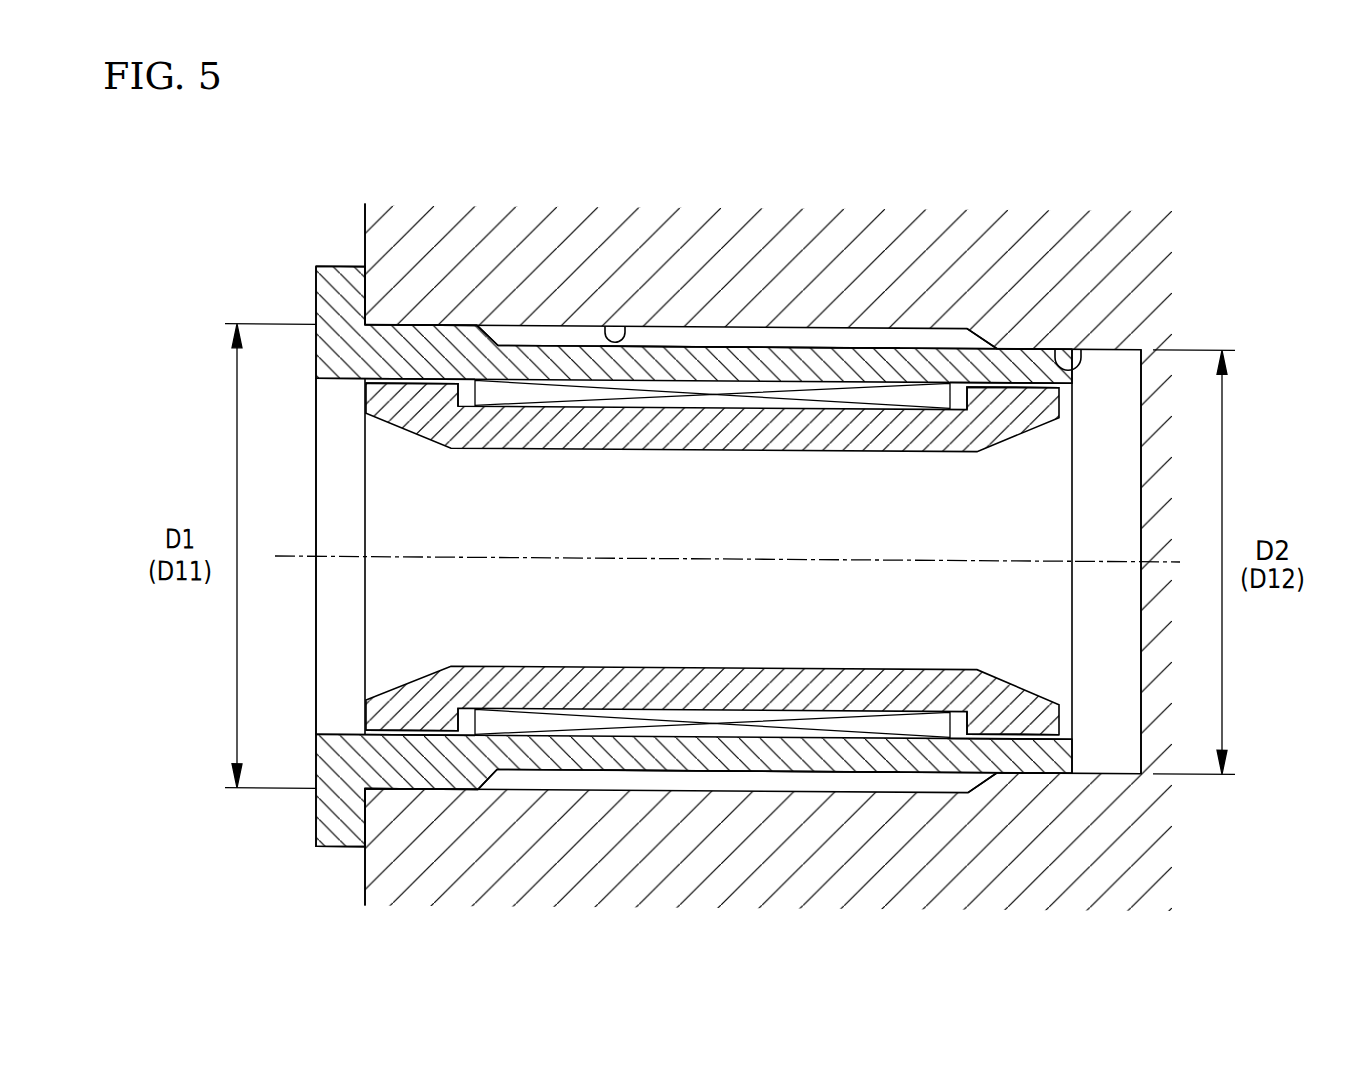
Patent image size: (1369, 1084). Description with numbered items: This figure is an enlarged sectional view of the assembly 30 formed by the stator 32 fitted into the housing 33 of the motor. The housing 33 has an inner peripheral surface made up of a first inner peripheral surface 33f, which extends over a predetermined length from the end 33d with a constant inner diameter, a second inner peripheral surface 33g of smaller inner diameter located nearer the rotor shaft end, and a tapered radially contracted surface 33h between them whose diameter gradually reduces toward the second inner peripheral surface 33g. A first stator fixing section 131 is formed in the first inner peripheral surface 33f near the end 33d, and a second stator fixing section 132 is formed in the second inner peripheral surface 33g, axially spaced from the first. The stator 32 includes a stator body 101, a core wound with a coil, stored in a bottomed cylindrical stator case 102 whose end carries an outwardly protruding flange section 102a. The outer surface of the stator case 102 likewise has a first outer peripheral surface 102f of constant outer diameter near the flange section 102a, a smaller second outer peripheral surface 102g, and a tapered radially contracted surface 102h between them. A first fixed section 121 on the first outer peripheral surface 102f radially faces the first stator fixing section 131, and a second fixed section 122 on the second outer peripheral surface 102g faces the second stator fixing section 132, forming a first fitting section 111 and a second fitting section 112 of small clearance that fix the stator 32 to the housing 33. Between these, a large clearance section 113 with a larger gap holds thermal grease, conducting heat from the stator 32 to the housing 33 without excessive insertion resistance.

The bearing device 30 is at (1120, 103).
The stator 32 is at (726, 544).
The housing 33 is at (708, 525).
The end 33d is at (363, 250).
The first inner peripheral surface 33f is at (621, 323).
The second inner peripheral surface 33g is at (1078, 344).
The radially contracted surface 33h is at (955, 326).
The stator body 101 is at (712, 432).
The stator case 102 is at (692, 544).
The flange section 102a is at (345, 846).
The first outer peripheral surface 102f is at (462, 323).
The second outer peripheral surface 102g is at (818, 344).
The radially contracted surface 102h is at (533, 343).
The first fitting section 111 is at (440, 310).
The second fitting section 112 is at (1008, 327).
The large clearance section 113 is at (735, 327).
The first fixed section 121 is at (387, 382).
The second fixed section 122 is at (1017, 382).
The first stator fixing section 131 is at (387, 383).
The second stator fixing section 132 is at (1017, 383).